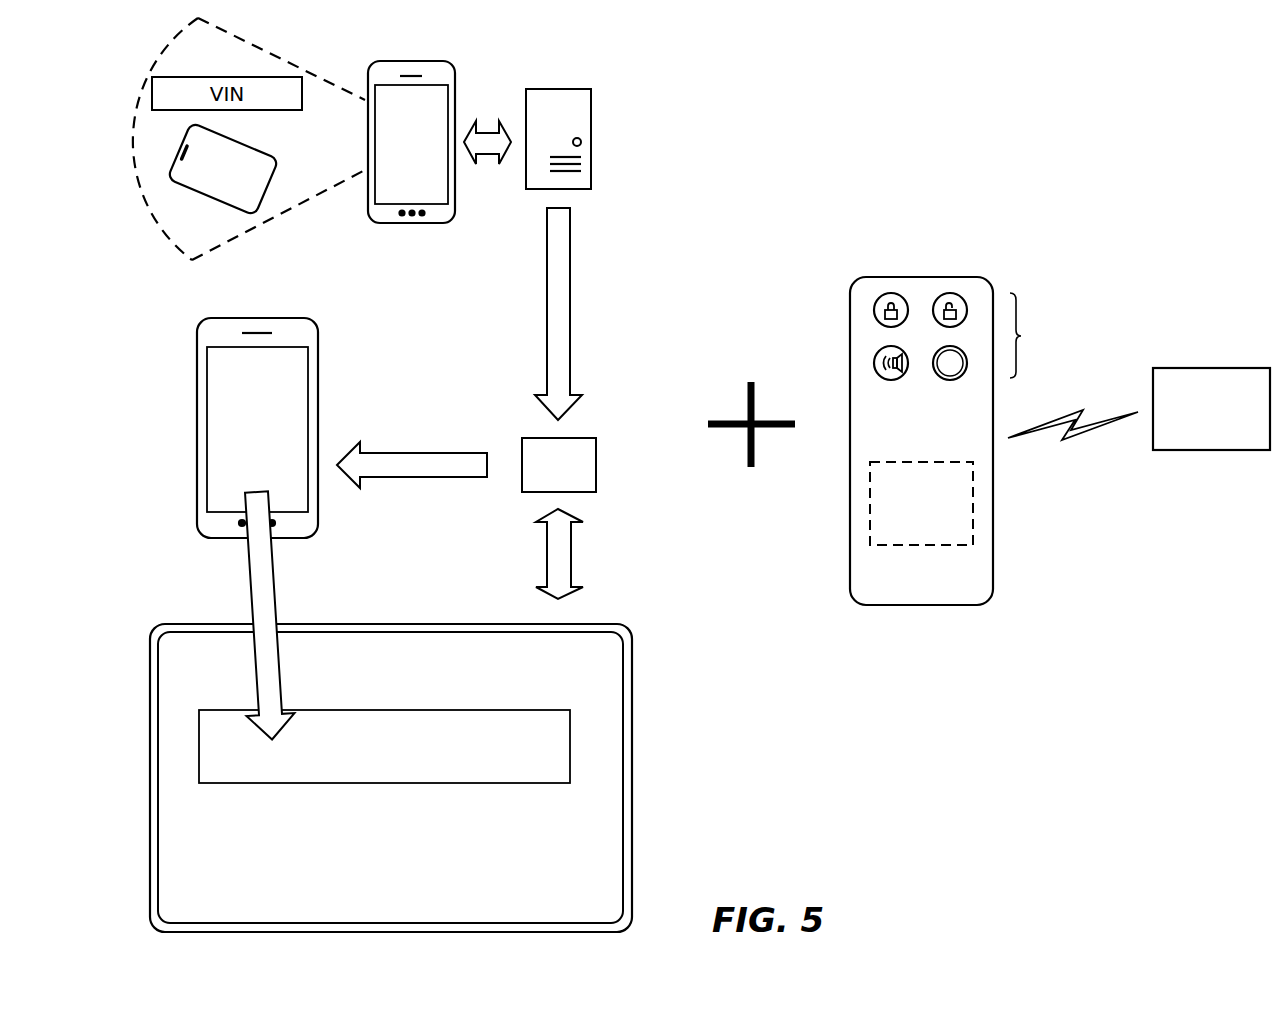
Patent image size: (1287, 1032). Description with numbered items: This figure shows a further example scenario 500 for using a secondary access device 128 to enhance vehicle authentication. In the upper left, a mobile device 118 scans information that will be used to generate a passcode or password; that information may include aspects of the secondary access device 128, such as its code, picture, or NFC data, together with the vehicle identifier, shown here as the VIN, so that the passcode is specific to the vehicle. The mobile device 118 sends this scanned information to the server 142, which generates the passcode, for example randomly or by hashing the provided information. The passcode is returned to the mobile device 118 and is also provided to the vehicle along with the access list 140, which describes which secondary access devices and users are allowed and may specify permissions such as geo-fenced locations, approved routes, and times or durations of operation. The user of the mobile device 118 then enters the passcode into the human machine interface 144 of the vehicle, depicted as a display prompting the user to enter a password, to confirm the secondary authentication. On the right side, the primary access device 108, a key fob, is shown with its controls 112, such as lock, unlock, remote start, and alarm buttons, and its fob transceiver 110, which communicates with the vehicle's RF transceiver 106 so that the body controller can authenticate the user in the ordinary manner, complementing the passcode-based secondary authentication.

The scenario 500 is at (1035, 101).
The secondary access device 128 is at (206, 182).
The mobile device 118 is at (396, 152).
The server 142 is at (542, 123).
The access list 140 is at (542, 475).
The human machine interface 144 is at (384, 892).
The primary access device 108 is at (955, 441).
The controls 112 is at (1027, 347).
The fob transceiver 110 is at (905, 513).
The RF transceiver 106 is at (1196, 420).